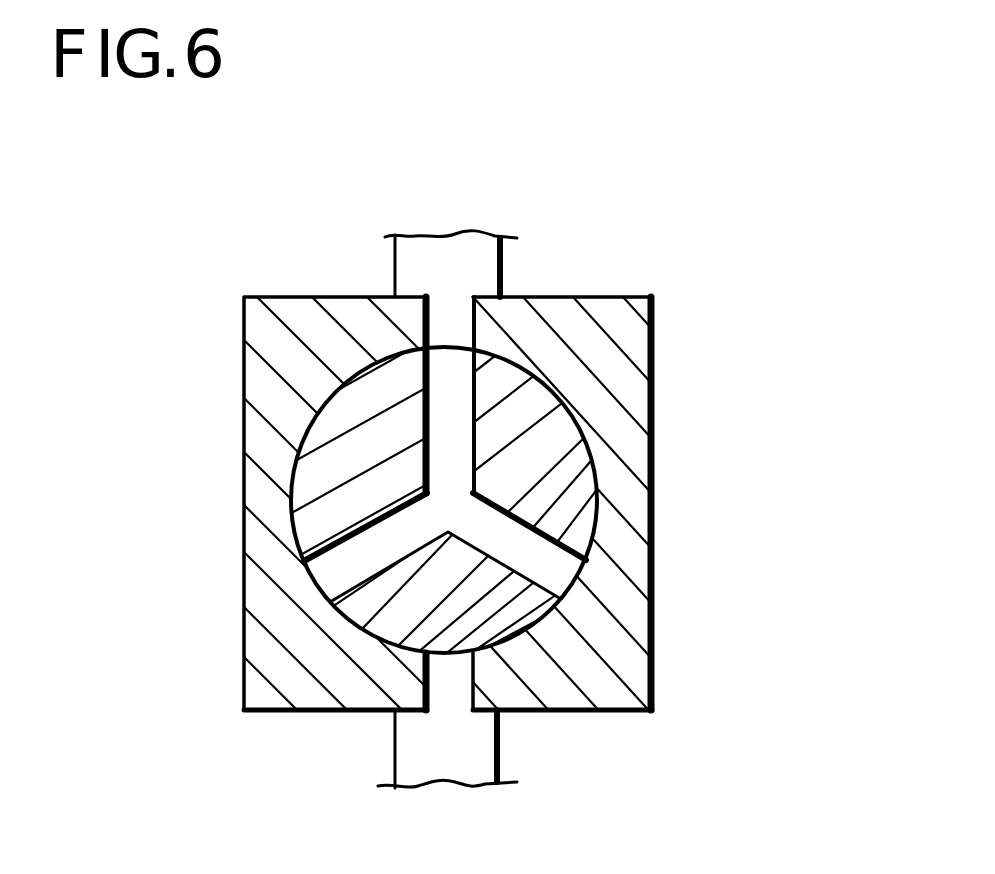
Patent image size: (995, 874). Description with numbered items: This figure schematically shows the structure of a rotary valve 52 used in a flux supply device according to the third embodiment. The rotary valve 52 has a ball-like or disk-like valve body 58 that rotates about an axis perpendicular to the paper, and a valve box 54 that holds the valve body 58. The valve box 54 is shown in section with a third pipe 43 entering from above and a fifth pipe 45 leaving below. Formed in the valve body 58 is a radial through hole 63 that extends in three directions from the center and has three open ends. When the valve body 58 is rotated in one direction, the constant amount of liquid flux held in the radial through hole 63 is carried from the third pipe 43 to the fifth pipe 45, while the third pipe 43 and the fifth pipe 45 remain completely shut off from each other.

The third pipe 43 is at (505, 268).
The fifth pipe 45 is at (502, 745).
The rotary valve 52 is at (497, 502).
The valve box 54 is at (620, 388).
The valve body 58 is at (313, 520).
The radial through hole 63 is at (558, 574).